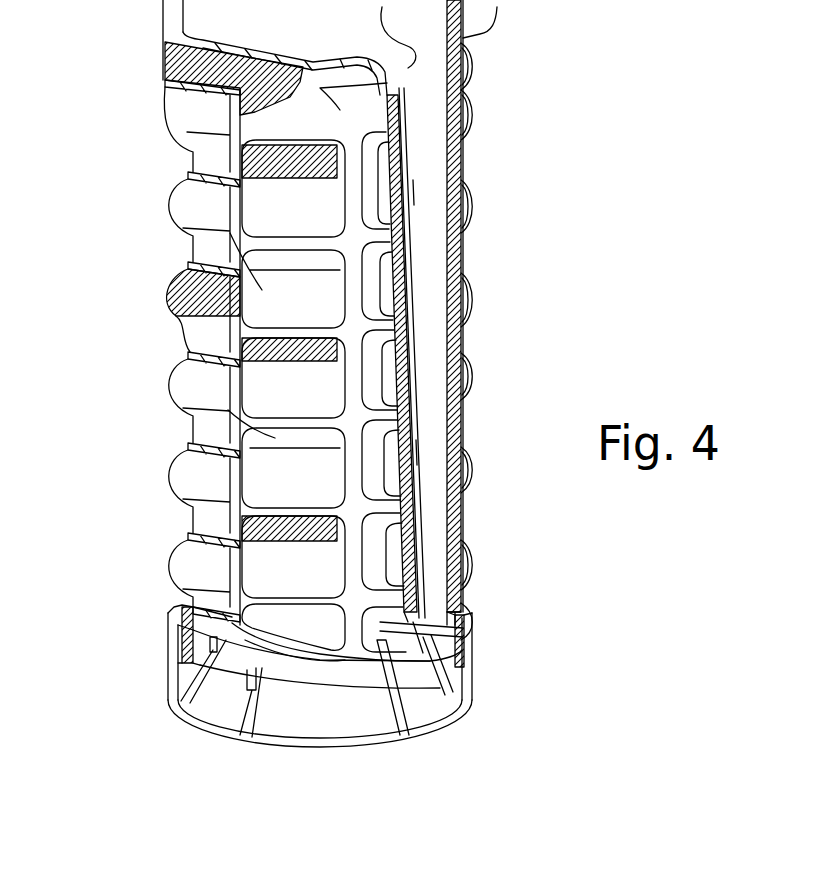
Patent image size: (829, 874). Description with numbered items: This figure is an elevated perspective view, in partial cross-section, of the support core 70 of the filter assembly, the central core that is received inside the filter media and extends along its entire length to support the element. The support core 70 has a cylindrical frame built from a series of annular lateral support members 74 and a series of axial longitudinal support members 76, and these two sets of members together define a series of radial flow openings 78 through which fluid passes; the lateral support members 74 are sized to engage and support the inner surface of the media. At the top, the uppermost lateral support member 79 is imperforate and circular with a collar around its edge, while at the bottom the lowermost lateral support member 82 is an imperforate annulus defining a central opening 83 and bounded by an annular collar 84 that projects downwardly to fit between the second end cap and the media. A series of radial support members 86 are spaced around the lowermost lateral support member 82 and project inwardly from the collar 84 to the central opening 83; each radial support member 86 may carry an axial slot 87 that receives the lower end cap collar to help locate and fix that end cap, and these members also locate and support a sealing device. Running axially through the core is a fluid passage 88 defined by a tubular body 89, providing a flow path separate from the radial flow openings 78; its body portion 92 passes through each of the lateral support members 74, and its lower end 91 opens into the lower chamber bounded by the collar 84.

The support core 70 is at (165, 290).
The lateral support members 74 is at (173, 375).
The longitudinal support members 76 is at (353, 490).
The radial flow openings 78 is at (230, 240).
The uppermost lateral support member 79 is at (163, 75).
The lowermost lateral support member 82 is at (180, 640).
The central opening 83 is at (440, 688).
The annular collar 84 is at (468, 657).
The radial support members 86 is at (265, 710).
The axial slot 87 is at (203, 705).
The axial fluid passage 88 is at (438, 357).
The tubular body 89 is at (462, 298).
The lower end 91 is at (462, 632).
The body portion 92 is at (462, 203).